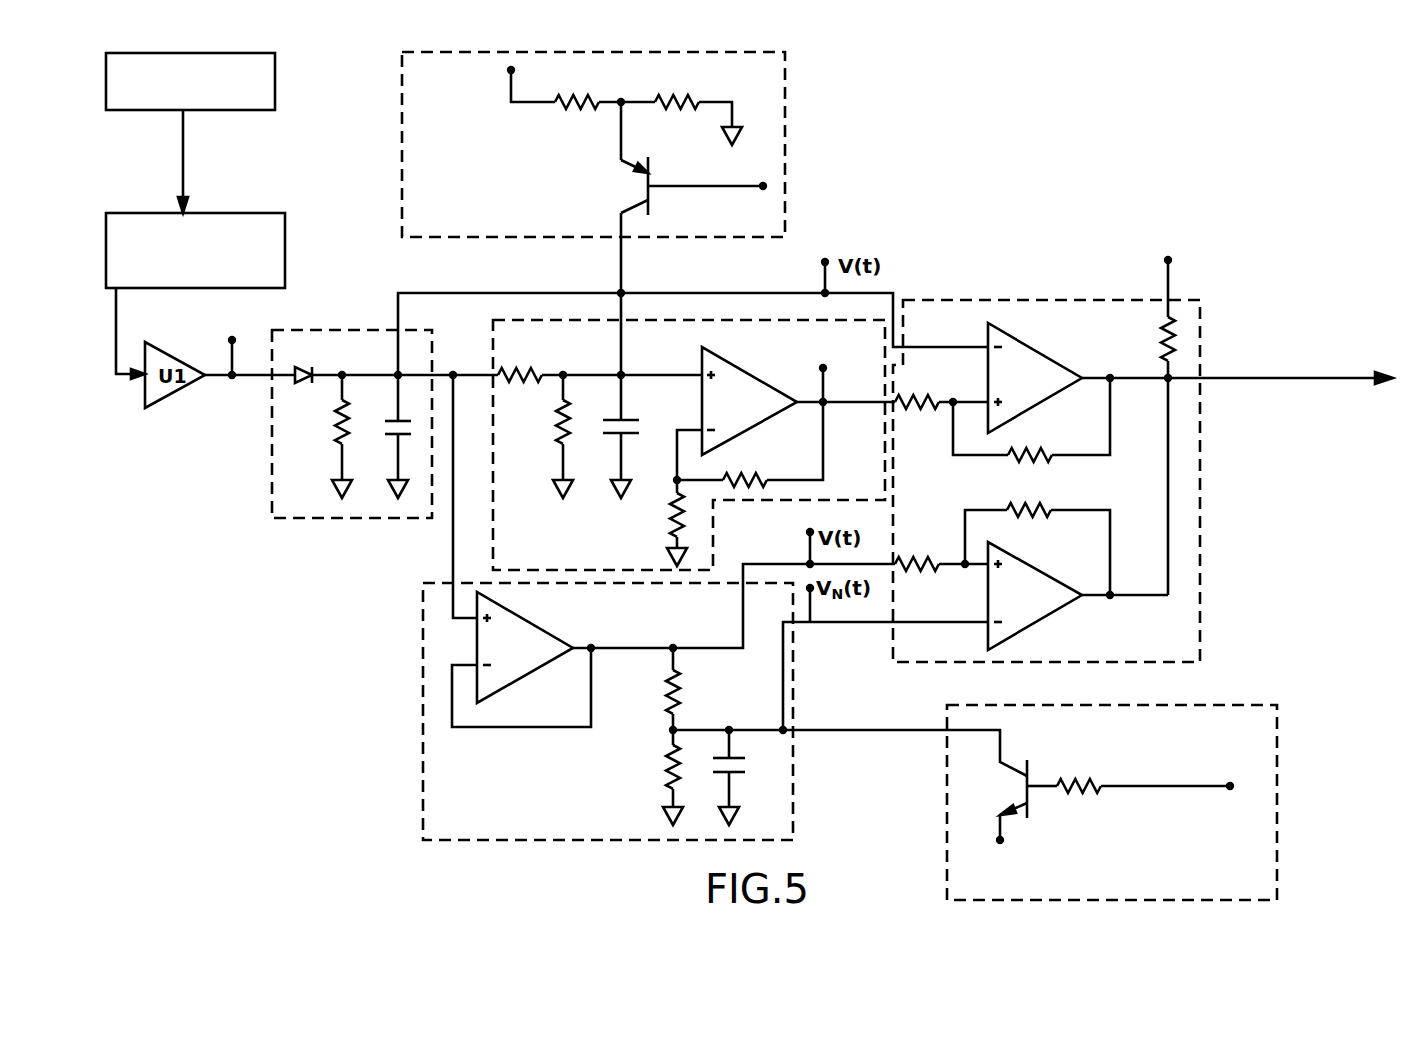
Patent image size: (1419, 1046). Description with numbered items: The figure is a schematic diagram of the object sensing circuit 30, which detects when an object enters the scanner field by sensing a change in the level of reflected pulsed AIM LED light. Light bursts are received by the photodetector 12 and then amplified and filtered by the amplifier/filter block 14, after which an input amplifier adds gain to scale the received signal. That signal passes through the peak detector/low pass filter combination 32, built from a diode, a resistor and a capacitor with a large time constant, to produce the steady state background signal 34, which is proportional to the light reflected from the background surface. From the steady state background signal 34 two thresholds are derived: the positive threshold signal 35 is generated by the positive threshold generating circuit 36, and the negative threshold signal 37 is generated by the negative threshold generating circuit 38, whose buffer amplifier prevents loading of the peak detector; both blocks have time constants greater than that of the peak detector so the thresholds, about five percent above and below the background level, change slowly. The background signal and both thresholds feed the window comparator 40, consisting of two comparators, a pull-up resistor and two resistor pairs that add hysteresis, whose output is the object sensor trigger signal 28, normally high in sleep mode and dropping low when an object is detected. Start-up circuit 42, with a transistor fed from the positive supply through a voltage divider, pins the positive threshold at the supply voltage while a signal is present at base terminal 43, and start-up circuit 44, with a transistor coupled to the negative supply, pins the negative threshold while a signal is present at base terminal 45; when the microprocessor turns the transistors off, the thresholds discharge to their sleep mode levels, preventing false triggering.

The photodetector 12 is at (275, 90).
The amplifier/filter block 14 is at (285, 250).
The object sensor trigger signal 28 is at (1213, 378).
The object sensing circuit 30 is at (1008, 172).
The peak detector/low pass filter combination 32 is at (388, 362).
The steady state background signal 34 is at (445, 374).
The positive threshold signal 35 is at (850, 402).
The positive threshold generating circuit 36 is at (677, 358).
The negative threshold signal 37 is at (783, 690).
The negative threshold generating circuit 38 is at (491, 810).
The window comparator 40 is at (1080, 343).
The start-up circuit 42 is at (785, 134).
The base terminal of transistor Q1 43 is at (763, 186).
The start-up circuit 44 is at (1241, 703).
The base terminal of transistor Q2 45 is at (1230, 783).